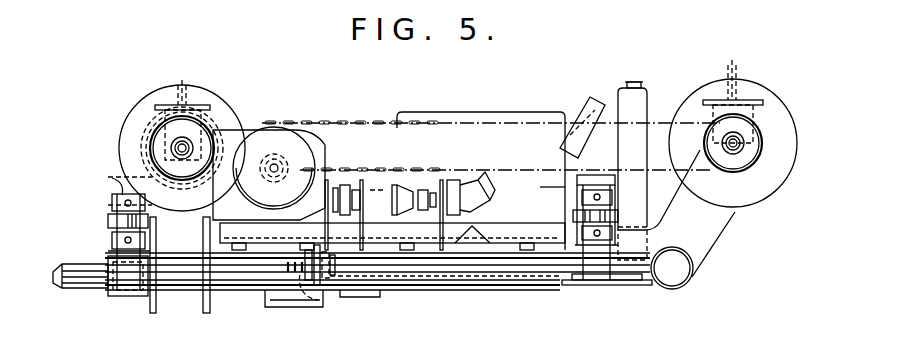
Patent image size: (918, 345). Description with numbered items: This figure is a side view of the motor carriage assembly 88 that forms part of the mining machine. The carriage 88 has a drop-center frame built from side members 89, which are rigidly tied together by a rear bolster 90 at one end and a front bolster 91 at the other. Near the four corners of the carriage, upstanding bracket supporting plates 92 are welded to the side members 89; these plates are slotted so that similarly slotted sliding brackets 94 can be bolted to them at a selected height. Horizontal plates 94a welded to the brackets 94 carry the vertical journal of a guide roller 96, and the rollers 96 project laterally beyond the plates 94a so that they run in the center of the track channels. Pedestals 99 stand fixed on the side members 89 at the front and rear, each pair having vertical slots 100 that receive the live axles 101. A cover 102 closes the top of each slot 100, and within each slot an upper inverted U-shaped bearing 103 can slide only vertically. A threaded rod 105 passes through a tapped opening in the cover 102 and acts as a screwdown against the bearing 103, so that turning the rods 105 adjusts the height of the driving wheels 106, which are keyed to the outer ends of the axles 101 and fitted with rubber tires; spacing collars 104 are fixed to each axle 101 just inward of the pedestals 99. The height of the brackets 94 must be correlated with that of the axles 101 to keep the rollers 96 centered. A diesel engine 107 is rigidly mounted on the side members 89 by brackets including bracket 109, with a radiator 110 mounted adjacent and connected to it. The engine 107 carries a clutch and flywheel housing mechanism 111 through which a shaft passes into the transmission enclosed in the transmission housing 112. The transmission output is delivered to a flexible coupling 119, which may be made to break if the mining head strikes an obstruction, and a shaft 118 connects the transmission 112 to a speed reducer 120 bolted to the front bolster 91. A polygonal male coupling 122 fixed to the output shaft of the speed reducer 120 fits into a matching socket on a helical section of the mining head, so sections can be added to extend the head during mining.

The motor carriage assembly 88 is at (502, 291).
The side members 89 is at (356, 296).
The rear bolster 90 is at (680, 290).
The front bolster 91 is at (150, 305).
The bracket supporting plates 92 is at (110, 246).
The sliding brackets 94 is at (112, 181).
The horizontal plates 94a is at (108, 203).
The guide roller 96 is at (108, 220).
The pedestals 99 is at (185, 120).
The vertical slots 100 is at (160, 125).
The live axles 101 is at (182, 148).
The cover 102 is at (165, 105).
The upper inverted U-shaped bearing 103 is at (165, 141).
The spacing collars 104 is at (178, 148).
The threaded rod 105 is at (180, 85).
The driving wheels 106 is at (226, 72).
The diesel engine 107 is at (496, 153).
The bracket 109 is at (608, 288).
The radiator 110 is at (652, 95).
The clutch and flywheel housing mechanism 111 is at (328, 275).
The transmission housing 112 is at (285, 300).
The shaft 118 is at (225, 327).
The flexible coupling 119 is at (236, 290).
The speed reducer 120 is at (172, 293).
The male coupling 122 is at (78, 290).